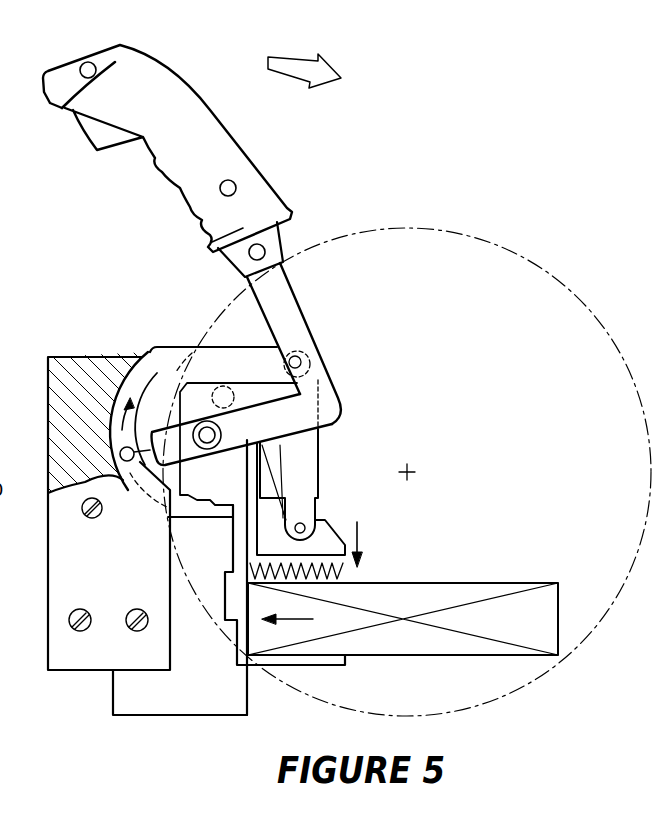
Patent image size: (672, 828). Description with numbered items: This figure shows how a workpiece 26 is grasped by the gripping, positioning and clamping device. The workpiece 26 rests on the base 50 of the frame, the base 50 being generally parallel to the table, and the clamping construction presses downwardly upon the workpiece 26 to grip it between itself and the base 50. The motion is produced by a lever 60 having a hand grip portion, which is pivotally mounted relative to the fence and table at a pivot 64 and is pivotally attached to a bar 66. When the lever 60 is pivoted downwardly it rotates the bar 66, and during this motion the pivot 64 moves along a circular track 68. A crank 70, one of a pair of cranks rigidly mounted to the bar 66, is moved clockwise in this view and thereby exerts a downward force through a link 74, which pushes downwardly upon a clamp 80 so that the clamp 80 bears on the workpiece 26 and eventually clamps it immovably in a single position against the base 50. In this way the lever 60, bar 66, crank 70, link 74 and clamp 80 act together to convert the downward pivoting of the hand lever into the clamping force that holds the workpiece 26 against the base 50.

The lever 60 is at (215, 110).
The circular track 68 is at (148, 360).
The crank 70 is at (183, 351).
The bar 66 is at (210, 437).
The pivot 64 is at (131, 465).
The link 74 is at (307, 452).
The clamp 80 is at (328, 533).
The workpiece 26 is at (478, 595).
The base 50 is at (323, 655).